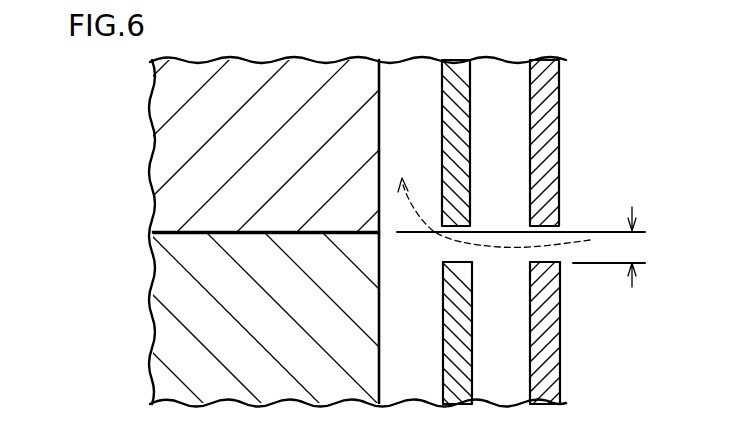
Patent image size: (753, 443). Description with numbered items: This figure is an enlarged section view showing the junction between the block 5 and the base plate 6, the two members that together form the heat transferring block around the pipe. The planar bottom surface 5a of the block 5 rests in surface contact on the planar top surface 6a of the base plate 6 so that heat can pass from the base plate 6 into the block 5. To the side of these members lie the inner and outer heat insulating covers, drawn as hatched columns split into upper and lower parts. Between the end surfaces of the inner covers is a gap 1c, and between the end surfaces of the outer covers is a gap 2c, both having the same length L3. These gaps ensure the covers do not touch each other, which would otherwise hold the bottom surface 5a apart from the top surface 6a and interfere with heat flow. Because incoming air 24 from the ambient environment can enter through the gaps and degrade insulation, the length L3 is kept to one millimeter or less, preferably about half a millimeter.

The block 5 is at (175, 142).
The base plate 6 is at (197, 332).
The bottom surface 5a is at (230, 247).
The top surface 6a is at (229, 241).
The gap 2c is at (548, 254).
The gap 1c is at (457, 251).
The incoming air 24 is at (508, 245).
The length of gaps L3 is at (644, 247).